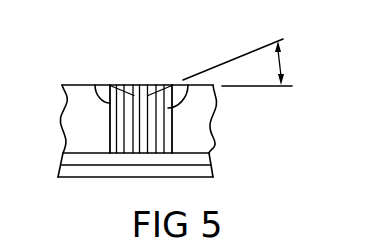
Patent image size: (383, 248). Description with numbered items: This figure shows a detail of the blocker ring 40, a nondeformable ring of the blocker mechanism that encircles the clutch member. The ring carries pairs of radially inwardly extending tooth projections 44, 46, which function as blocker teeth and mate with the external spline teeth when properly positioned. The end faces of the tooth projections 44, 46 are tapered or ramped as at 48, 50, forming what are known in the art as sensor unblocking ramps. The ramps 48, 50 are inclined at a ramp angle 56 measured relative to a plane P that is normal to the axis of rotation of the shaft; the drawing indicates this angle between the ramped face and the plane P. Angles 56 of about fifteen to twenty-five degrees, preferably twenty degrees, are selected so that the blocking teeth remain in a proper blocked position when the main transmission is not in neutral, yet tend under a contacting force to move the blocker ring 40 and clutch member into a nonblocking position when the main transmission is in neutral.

The blocker ring 40 is at (110, 178).
The tooth projection 44 is at (108, 103).
The tooth projection 46 is at (172, 108).
The taper or ramp 48 is at (128, 85).
The taper or ramp 50 is at (157, 85).
The ramp angle 56 is at (284, 63).
The plane P is at (245, 87).